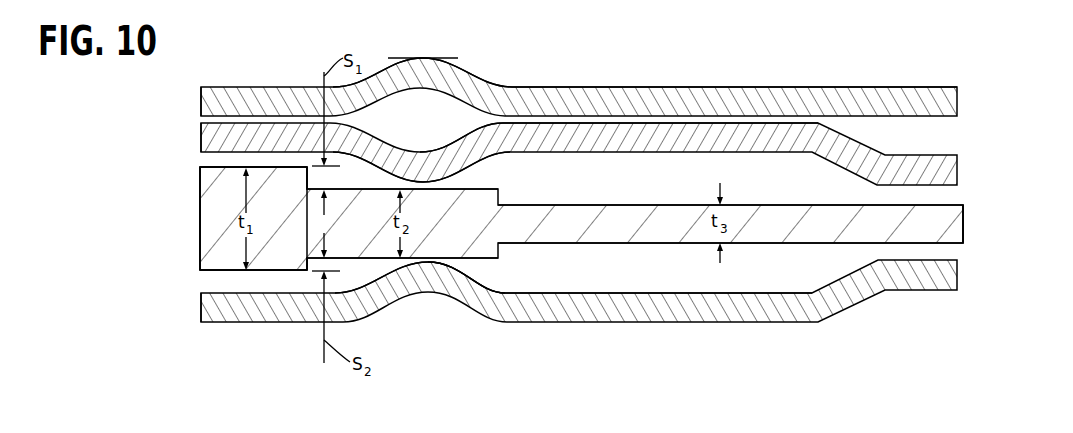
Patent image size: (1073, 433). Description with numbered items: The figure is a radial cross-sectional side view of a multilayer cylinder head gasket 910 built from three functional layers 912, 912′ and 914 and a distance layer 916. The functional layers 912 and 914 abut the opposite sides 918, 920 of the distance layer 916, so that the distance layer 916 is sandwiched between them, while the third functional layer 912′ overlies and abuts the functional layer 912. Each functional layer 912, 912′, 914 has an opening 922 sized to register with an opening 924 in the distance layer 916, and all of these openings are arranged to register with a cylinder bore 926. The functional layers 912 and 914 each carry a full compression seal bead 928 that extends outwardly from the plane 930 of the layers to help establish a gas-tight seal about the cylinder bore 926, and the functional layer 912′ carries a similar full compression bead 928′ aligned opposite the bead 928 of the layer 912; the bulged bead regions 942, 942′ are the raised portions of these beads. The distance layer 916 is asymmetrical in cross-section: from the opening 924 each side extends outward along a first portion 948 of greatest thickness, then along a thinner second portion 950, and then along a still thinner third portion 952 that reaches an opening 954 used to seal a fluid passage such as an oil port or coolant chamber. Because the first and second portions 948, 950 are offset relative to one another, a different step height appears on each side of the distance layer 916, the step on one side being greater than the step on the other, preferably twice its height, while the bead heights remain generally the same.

The multilayer gasket 910 is at (852, 48).
The functional layer 912 is at (218, 123).
The functional layer 912′ is at (256, 87).
The functional layer 914 is at (262, 323).
The distance layer 916 is at (200, 192).
The side of distance layer 918 is at (236, 163).
The side of distance layer 920 is at (228, 276).
The opening 922 is at (200, 137).
The opening 924 is at (200, 245).
The cylinder bore 926 is at (93, 220).
The full compression seal bead 928 is at (478, 158).
The full compression bead 928′ is at (445, 62).
The plane of the layers 930 is at (607, 152).
The bulged portion 942 is at (490, 158).
The outer bulged portion 942′ is at (423, 57).
The first portion 948 is at (283, 166).
The second portion 950 is at (357, 262).
The third portion 952 is at (745, 243).
The opening 954 is at (965, 222).